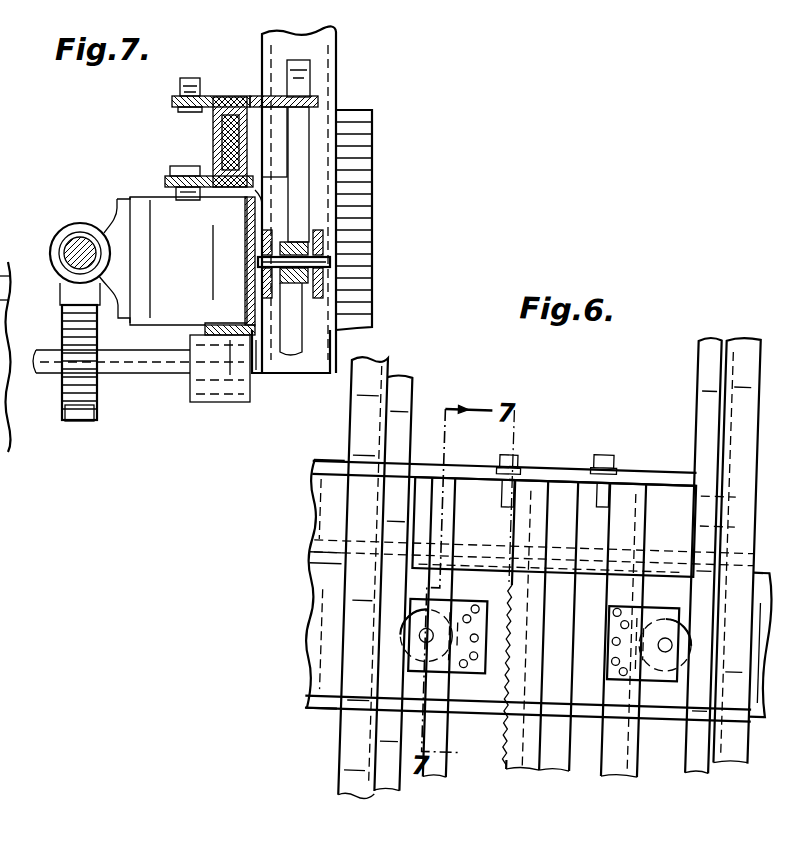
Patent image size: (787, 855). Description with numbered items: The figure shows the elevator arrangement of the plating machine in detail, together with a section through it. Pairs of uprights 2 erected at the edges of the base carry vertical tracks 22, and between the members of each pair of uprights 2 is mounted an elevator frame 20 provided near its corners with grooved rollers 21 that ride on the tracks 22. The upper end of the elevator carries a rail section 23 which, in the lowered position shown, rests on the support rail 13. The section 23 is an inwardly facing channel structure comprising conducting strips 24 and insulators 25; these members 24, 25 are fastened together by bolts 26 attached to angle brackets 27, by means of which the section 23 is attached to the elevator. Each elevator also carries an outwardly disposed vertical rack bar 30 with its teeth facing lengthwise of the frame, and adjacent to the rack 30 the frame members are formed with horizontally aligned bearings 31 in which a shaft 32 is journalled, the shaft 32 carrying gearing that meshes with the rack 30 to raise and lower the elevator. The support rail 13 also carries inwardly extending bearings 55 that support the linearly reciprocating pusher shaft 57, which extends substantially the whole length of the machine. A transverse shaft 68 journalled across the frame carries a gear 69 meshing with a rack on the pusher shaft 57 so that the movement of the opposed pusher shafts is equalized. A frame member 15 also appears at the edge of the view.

In FIG. 6, the uprights 2 is at (372, 361).
In FIG. 7, the support rail 13 is at (248, 295).
In FIG. 7, the frame member 15 is at (10, 328).
In FIG. 6, the elevator frame 20 is at (631, 480).
In FIG. 7, the grooved rollers 21 is at (9, 267).
In FIG. 6, the grooved rollers 21 is at (418, 639).
In FIG. 7, the vertical tracks 22 is at (298, 165).
In FIG. 6, the vertical tracks 22 is at (399, 392).
In FIG. 7, the rail section 23 is at (228, 96).
In FIG. 7, the conducting strips 24 is at (213, 122).
In FIG. 7, the insulators 25 is at (242, 190).
In FIG. 7, the bolts 26 is at (214, 143).
In FIG. 7, the angle brackets 27 is at (318, 106).
In FIG. 7, the vertical rack bar 30 is at (362, 193).
In FIG. 7, the bearings 31 is at (322, 241).
In FIG. 7, the shaft 32 is at (330, 264).
In FIG. 6, the shaft 32 is at (435, 634).
In FIG. 7, the bearings 55 is at (146, 240).
In FIG. 7, the pusher shaft 57 is at (80, 240).
In FIG. 7, the transverse shafts 68 is at (54, 368).
In FIG. 7, the gears 69 is at (82, 421).